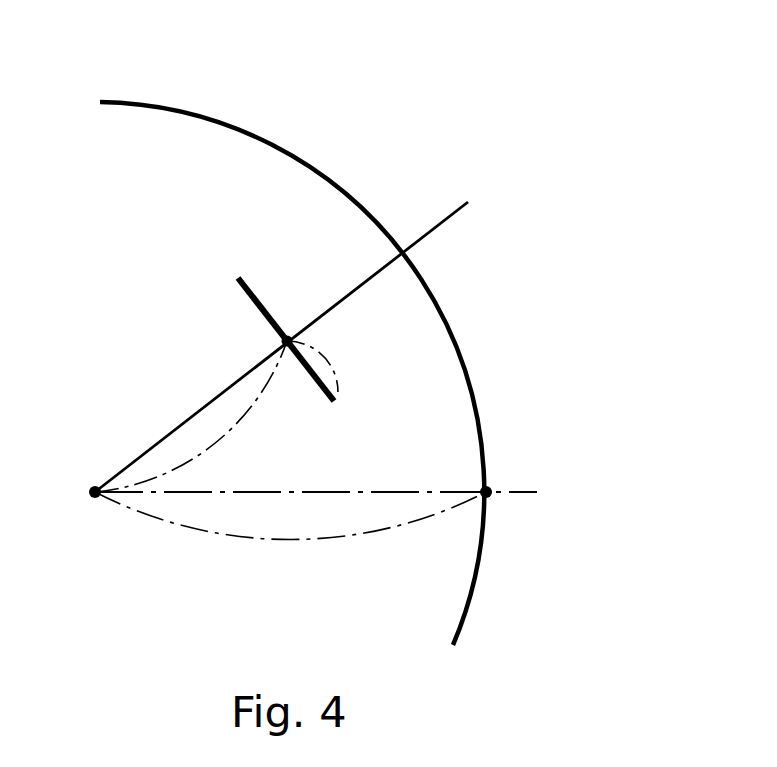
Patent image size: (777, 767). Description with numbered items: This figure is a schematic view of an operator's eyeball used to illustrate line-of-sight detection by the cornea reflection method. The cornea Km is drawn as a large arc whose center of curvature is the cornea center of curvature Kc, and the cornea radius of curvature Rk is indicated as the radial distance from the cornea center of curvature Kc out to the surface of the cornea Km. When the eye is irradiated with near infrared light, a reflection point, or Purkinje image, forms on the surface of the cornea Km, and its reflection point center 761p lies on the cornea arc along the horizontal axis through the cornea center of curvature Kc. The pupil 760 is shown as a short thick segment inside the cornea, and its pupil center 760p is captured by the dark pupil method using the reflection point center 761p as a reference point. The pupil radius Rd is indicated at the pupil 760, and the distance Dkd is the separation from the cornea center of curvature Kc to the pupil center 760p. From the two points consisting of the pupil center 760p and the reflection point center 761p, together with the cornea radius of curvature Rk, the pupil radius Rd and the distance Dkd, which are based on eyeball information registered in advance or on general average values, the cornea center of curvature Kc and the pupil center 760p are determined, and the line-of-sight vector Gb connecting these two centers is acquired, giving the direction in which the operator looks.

The cornea Km is at (263, 139).
The line-of-sight vector Gb is at (446, 218).
The pupil 760 is at (248, 293).
The pupil center 760p is at (287, 337).
The pupil radius Rd is at (330, 355).
The distance from cornea center of curvature to pupil center Dkd is at (250, 410).
The cornea radius of curvature Rk is at (318, 539).
The cornea center of curvature Kc is at (92, 496).
The reflection point center 761p is at (490, 487).